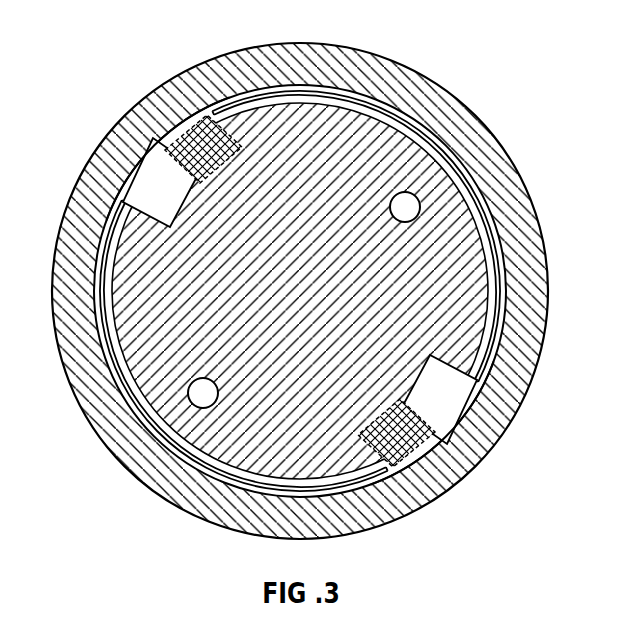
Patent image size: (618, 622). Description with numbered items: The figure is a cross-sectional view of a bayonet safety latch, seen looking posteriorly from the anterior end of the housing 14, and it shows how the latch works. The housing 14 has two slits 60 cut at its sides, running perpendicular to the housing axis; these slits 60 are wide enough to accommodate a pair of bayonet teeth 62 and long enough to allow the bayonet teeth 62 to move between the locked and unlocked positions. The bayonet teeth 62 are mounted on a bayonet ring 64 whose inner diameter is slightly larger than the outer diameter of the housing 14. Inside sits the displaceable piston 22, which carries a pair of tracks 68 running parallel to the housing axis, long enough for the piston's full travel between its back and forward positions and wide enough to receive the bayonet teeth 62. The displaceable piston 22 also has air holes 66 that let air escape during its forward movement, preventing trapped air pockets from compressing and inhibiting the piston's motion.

The housing 14 is at (300, 291).
The displaceable piston 22 is at (255, 291).
The slits 60 is at (312, 272).
The bayonet teeth 62 is at (337, 259).
The bayonet ring 64 is at (300, 317).
The air holes 66 is at (319, 311).
The tracks 68 is at (345, 264).